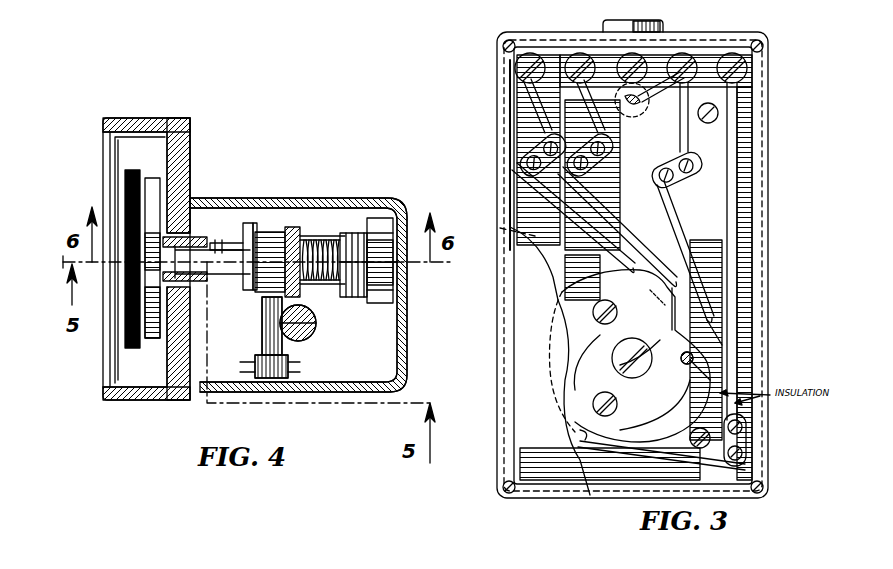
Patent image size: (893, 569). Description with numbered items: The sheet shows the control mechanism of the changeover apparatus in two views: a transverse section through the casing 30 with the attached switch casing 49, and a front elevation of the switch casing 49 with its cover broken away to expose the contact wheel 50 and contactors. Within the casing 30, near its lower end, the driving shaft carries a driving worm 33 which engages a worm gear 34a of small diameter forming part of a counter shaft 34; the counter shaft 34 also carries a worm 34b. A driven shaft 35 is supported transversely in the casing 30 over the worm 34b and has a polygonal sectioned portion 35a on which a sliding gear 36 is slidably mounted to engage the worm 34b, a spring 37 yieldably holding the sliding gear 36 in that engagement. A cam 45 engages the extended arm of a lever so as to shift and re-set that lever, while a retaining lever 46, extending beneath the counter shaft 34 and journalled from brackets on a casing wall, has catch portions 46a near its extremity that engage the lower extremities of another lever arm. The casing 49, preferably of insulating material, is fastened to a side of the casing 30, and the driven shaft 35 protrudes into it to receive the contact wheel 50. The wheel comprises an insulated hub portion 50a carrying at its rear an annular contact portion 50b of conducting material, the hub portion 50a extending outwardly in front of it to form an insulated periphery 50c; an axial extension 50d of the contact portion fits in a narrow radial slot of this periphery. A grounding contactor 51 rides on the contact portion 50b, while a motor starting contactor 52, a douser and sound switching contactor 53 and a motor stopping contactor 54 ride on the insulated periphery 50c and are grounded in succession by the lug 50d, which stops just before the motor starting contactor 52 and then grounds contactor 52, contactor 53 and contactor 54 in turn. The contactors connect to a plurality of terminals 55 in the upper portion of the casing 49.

In FIG. 4, the casing 30 is at (207, 394).
In FIG. 3, the casing 30 is at (497, 250).
In FIG. 4, the driving worm 33 is at (318, 324).
In FIG. 4, the counter shaft 34 is at (256, 304).
In FIG. 4, the worm gear 34a is at (285, 342).
In FIG. 4, the worm 34b is at (252, 235).
In FIG. 4, the driven shaft 35 is at (247, 247).
In FIG. 4, the polygonal sectioned portion 35a is at (282, 235).
In FIG. 4, the sliding gear 36 is at (292, 228).
In FIG. 4, the spring 37 is at (353, 224).
In FIG. 4, the cam 45 is at (373, 290).
In FIG. 4, the retaining lever 46 is at (332, 237).
In FIG. 4, the catch portions 46a is at (258, 262).
In FIG. 4, the casing 49 is at (132, 397).
In FIG. 3, the casing 49 is at (752, 232).
In FIG. 4, the contact wheel 50 is at (136, 185).
In FIG. 3, the contact wheel 50 is at (595, 345).
In FIG. 3, the insulated hub portion 50a is at (605, 375).
In FIG. 4, the annular contact portion 50b is at (160, 190).
In FIG. 3, the annular contact portion 50b is at (700, 360).
In FIG. 4, the insulated periphery 50c is at (148, 190).
In FIG. 3, the insulated periphery 50c is at (685, 420).
In FIG. 4, the axial extension 50d is at (125, 298).
In FIG. 3, the axial extension 50d is at (660, 300).
In FIG. 3, the grounding contactor 51 is at (725, 345).
In FIG. 3, the motor starting contactor 52 is at (655, 250).
In FIG. 3, the douser and sound switching contactor 53 is at (577, 447).
In FIG. 3, the motor stopping contactor 54 is at (548, 280).
In FIG. 3, the terminals 55 is at (575, 58).